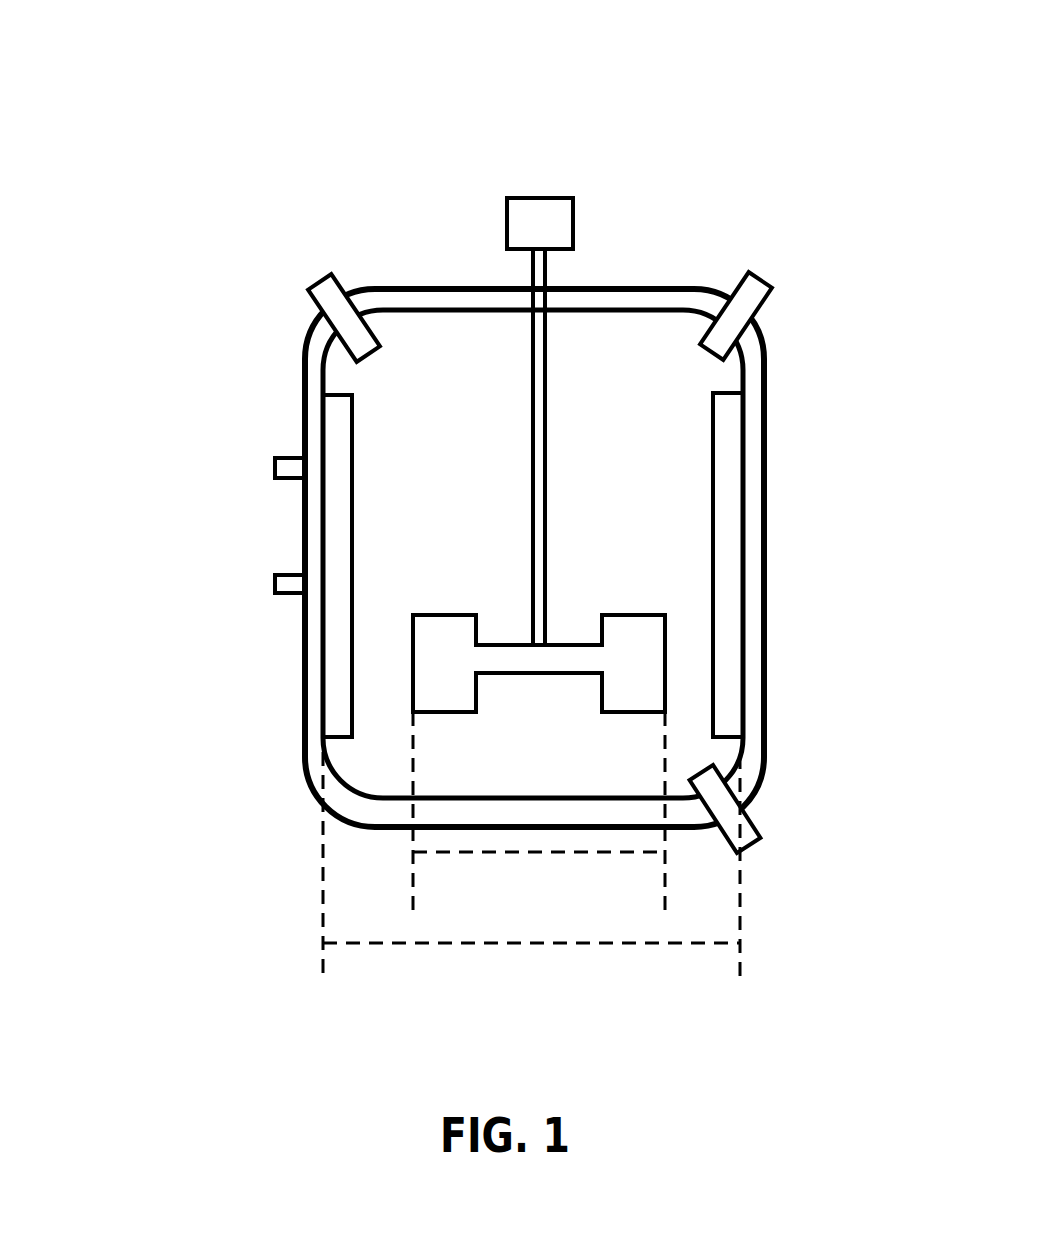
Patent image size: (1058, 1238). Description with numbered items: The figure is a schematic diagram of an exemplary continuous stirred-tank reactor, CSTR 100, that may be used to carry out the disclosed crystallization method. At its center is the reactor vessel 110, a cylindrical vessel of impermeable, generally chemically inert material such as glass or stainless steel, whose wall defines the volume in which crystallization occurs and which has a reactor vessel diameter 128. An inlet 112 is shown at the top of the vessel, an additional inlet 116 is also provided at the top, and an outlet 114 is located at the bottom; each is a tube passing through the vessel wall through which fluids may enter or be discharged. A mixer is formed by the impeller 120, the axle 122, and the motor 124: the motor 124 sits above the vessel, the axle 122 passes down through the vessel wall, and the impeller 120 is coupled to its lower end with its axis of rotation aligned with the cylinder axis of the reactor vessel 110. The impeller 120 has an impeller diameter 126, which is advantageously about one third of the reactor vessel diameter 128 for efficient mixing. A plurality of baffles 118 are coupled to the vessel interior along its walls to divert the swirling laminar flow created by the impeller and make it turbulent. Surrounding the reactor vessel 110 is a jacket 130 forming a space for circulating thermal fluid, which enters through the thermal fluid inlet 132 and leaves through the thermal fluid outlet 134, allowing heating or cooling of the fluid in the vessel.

The CSTR 100 is at (549, 71).
The reactor vessel 110 is at (483, 306).
The inlet 112 is at (346, 284).
The outlet 114 is at (757, 822).
The additional inlet 116 is at (753, 285).
The plurality of baffles 118 is at (343, 720).
The impeller 120 is at (624, 660).
The axle 122 is at (541, 510).
The motor 124 is at (540, 196).
The impeller diameter 126 is at (599, 858).
The reactor vessel diameter 128 is at (624, 949).
The jacket 130 is at (305, 363).
The thermal fluid inlet 132 is at (278, 462).
The thermal fluid outlet 134 is at (279, 569).